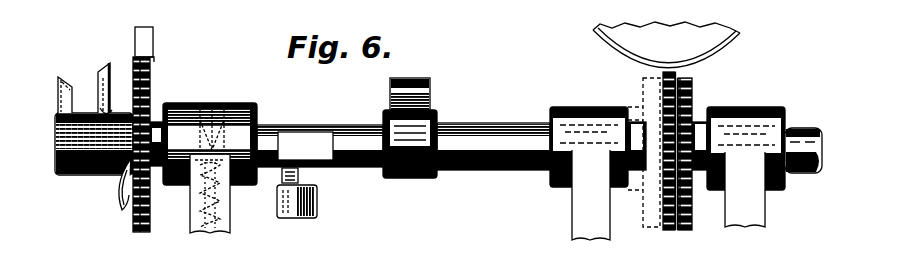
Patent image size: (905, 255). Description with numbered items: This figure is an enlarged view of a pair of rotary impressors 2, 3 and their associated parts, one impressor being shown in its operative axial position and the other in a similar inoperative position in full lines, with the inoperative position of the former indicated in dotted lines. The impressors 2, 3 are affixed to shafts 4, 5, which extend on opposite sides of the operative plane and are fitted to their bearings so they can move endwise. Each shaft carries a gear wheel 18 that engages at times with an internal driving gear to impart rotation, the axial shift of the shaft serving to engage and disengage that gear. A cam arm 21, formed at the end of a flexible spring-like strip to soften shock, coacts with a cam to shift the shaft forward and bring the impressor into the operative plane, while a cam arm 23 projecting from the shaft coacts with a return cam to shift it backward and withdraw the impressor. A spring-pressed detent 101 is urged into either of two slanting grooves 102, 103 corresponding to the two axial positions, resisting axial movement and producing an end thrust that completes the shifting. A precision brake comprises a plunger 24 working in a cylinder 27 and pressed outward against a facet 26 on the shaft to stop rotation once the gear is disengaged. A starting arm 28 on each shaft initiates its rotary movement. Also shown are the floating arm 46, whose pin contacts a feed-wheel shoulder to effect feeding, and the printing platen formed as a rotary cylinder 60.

The impressor 2 is at (663, 205).
The impressor 3 is at (700, 212).
The shaft 4 is at (485, 170).
The shaft 5 is at (802, 175).
The gear wheel 18 is at (134, 218).
The cam arm 21 is at (110, 96).
The cam arm 23 is at (63, 104).
The plunger 24 is at (299, 179).
The facet 26 is at (305, 140).
The cylinder 27 is at (318, 206).
The starting arm 28 is at (430, 108).
The floating arm 46 is at (153, 43).
The rotary cylinder 60 is at (666, 45).
The spring-pressed detent 101 is at (224, 190).
The groove 102 is at (212, 124).
The groove 103 is at (250, 97).